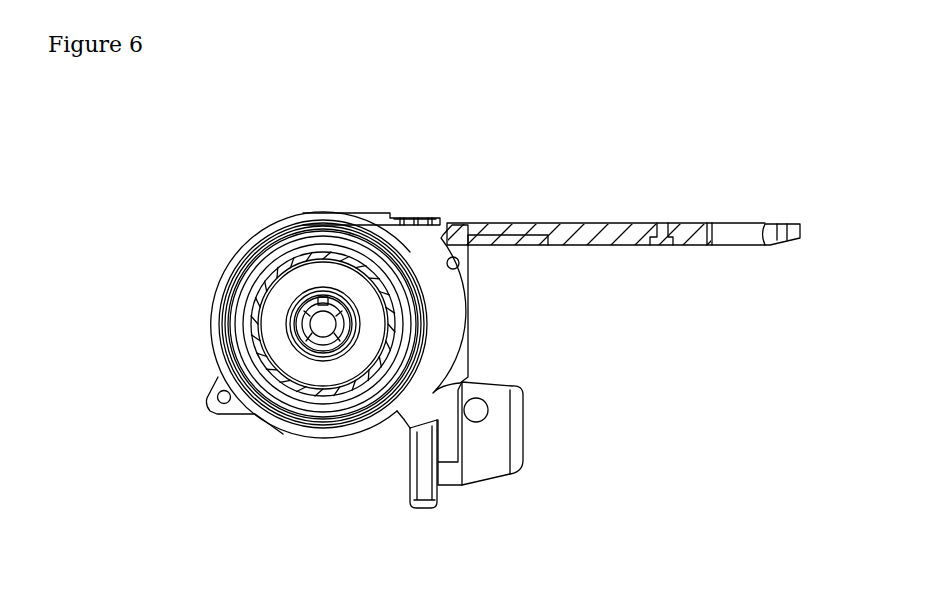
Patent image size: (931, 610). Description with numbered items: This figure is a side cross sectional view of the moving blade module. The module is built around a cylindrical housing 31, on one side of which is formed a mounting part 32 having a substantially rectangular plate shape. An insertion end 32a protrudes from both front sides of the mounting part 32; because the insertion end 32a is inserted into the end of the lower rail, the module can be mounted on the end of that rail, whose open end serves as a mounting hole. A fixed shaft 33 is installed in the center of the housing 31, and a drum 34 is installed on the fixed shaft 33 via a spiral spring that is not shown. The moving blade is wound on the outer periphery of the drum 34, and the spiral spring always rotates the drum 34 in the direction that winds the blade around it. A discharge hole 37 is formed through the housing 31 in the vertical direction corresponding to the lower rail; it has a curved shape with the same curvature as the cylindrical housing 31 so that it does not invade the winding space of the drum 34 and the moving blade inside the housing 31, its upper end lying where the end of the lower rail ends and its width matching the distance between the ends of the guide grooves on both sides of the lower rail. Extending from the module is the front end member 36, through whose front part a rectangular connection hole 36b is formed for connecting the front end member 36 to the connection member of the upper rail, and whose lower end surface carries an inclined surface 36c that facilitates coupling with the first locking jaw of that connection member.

The housing 31 is at (305, 432).
The mounting part 32 is at (420, 496).
The insertion end 32a is at (518, 462).
The fixed shaft 33 is at (322, 324).
The drum 34 is at (253, 275).
The front end member 36 is at (623, 224).
The connection hole 36b is at (740, 238).
The inclined surface 36c is at (778, 246).
The discharge hole 37 is at (447, 327).